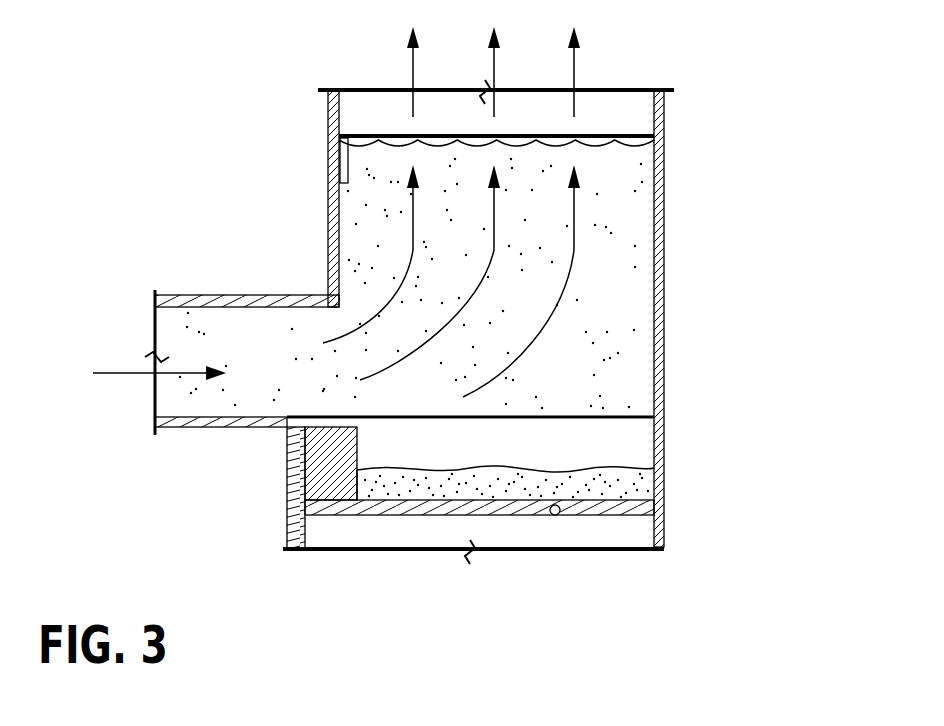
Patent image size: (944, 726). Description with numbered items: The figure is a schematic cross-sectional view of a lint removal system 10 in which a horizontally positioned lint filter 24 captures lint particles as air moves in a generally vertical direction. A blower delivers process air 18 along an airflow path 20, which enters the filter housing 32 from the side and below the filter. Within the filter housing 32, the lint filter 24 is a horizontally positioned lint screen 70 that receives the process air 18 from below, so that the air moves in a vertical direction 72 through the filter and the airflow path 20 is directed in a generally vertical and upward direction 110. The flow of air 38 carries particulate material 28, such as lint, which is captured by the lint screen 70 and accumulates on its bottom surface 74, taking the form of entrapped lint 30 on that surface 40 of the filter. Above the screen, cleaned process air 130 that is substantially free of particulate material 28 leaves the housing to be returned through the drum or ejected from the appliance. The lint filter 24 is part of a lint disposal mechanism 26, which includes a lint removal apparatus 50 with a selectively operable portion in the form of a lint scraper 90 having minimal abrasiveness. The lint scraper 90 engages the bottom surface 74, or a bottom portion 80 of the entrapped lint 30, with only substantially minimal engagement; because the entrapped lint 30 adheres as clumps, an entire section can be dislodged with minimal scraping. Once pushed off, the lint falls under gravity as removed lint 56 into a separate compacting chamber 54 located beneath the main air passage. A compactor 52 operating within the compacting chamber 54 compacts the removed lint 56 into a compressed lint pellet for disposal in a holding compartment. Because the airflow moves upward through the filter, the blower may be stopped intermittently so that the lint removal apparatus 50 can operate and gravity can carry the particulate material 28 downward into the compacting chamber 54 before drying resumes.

The lint removal system 10 is at (520, 309).
The process air 18 is at (118, 372).
The airflow path 20 is at (228, 403).
The lint filter 24 is at (316, 106).
The lint disposal mechanism 26 is at (700, 476).
The particulate material 28 is at (562, 348).
The entrapped lint 30 is at (450, 157).
The filter housing 32 is at (678, 215).
The air 38 is at (560, 316).
The surface 40 is at (655, 156).
The lint removal apparatus 50 is at (316, 197).
The compactor 52 is at (337, 478).
The compacting chamber 54 is at (452, 470).
The removed lint 56 is at (623, 483).
The lint screen 70 is at (371, 137).
The vertical direction 72 is at (598, 195).
The bottom surface 74 is at (585, 135).
The bottom portion 80 is at (455, 158).
The lint scraper 90 is at (345, 163).
The upward direction 110 is at (588, 270).
The cleaned process air 130 is at (577, 67).